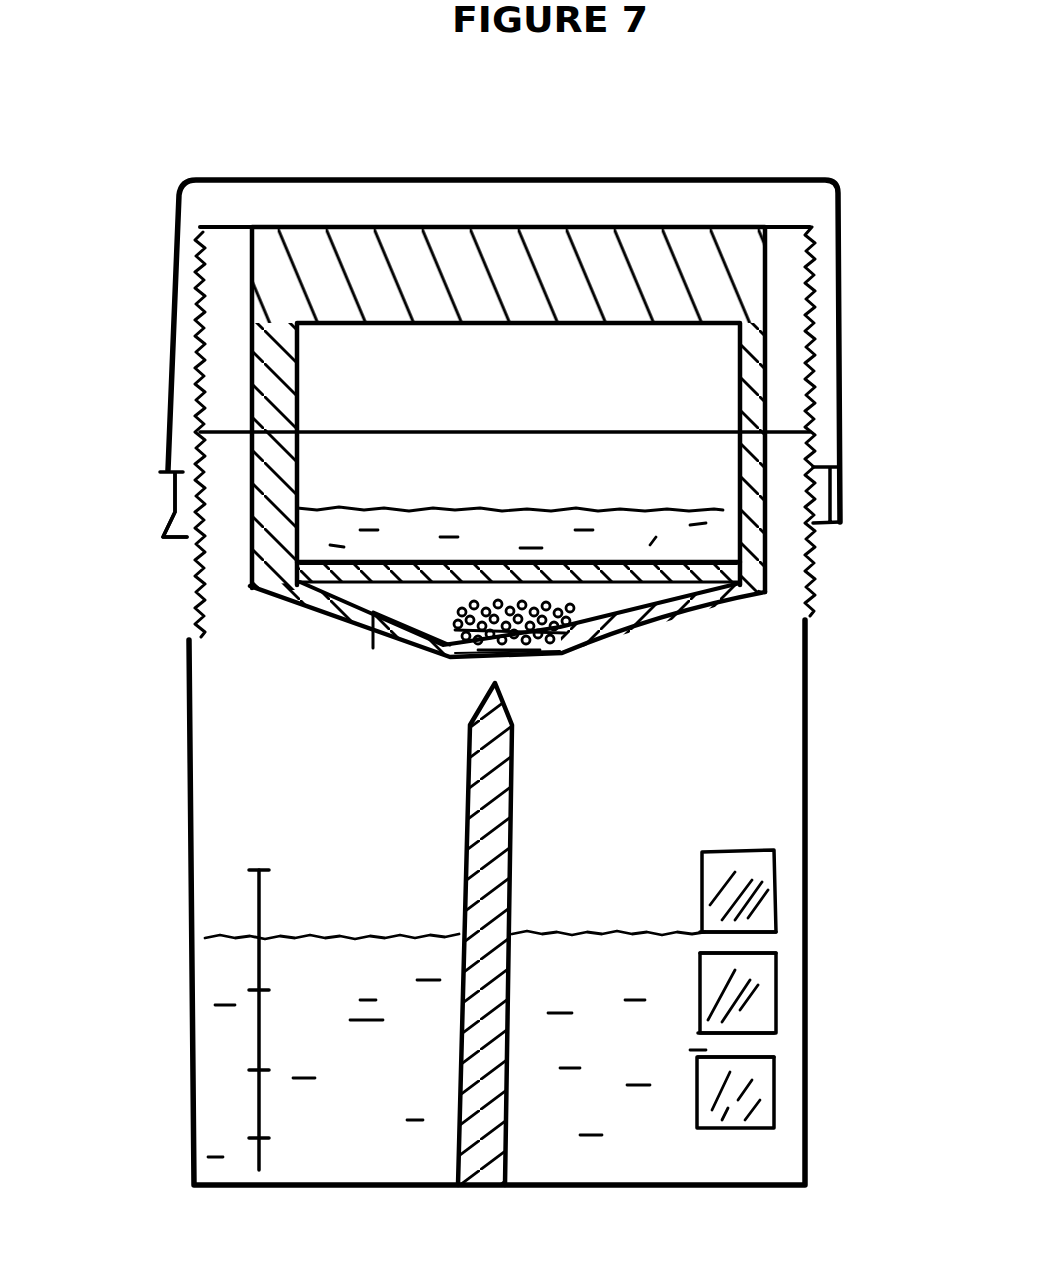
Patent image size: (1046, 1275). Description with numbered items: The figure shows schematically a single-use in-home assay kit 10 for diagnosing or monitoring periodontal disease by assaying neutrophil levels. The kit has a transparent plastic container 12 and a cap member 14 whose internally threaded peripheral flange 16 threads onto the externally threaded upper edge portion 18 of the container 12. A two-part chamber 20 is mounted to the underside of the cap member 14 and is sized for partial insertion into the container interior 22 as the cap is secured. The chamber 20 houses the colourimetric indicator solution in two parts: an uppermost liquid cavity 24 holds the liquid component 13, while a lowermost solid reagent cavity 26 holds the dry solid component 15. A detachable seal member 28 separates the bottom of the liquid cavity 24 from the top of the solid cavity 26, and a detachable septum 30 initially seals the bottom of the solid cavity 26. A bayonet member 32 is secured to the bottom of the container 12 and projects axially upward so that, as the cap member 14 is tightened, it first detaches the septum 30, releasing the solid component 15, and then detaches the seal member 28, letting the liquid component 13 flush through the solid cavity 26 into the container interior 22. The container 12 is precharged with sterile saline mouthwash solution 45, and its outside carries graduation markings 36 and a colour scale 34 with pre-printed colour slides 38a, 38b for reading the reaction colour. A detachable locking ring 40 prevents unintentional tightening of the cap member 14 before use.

The assay kit 10 is at (887, 678).
The container 12 is at (188, 767).
The liquid component 13 is at (510, 530).
The cap member 14 is at (430, 196).
The solid component 15 is at (562, 658).
The internally threaded peripheral flange 16 is at (836, 352).
The externally threaded upper edge portion 18 is at (808, 578).
The two-part chamber 20 is at (655, 255).
The container interior 22 is at (352, 814).
The liquid cavity 24 is at (452, 487).
The solid reagent cavity 26 is at (370, 657).
The seal member 28 is at (605, 558).
The septum 30 is at (465, 668).
The bayonet member 32 is at (500, 818).
The colour scale 34 is at (766, 893).
The graduation markings 36 is at (256, 958).
The colour slide 38a is at (770, 1090).
The colour slide 38b is at (760, 967).
The locking ring 40 is at (168, 518).
The sterile saline mouthwash solution 45 is at (592, 986).